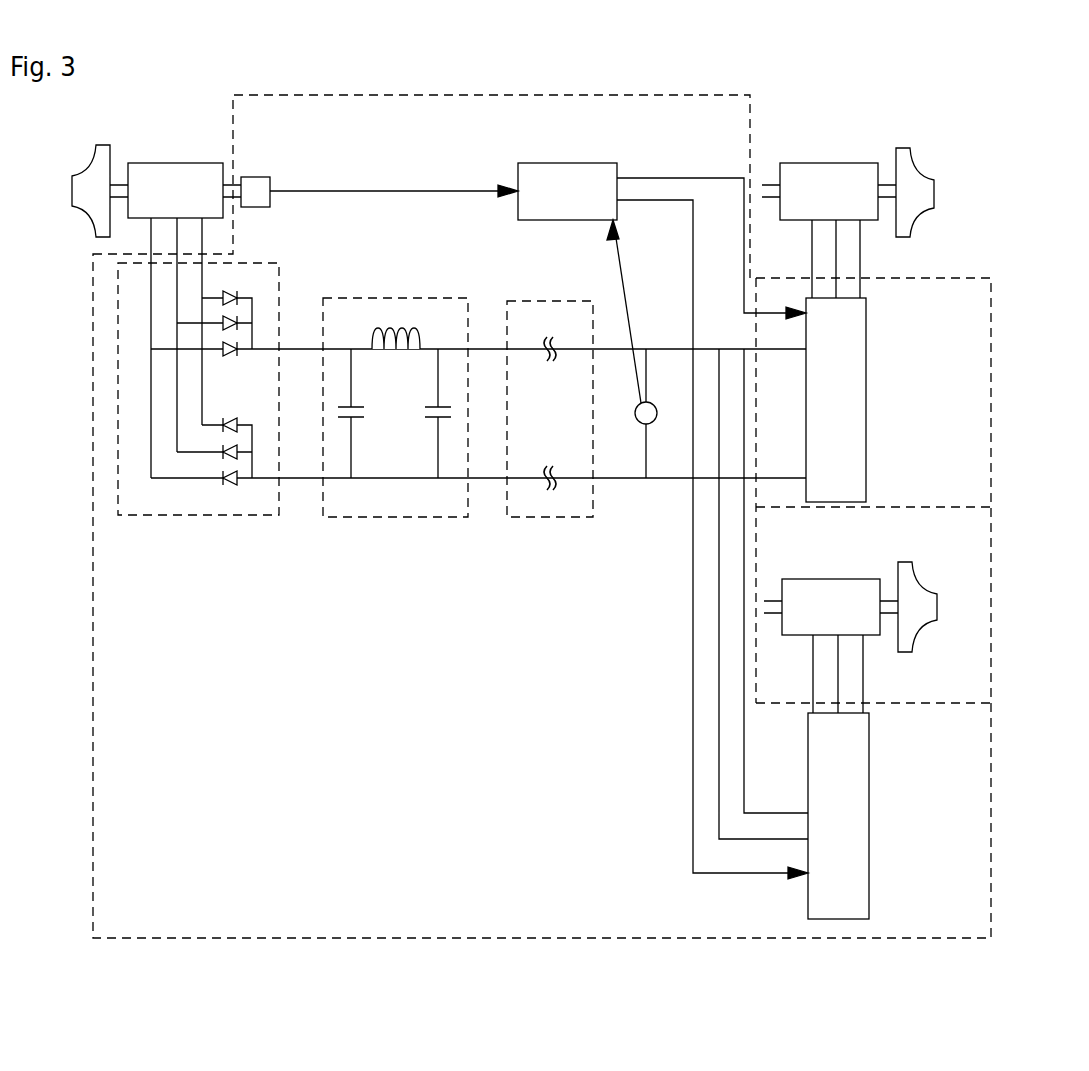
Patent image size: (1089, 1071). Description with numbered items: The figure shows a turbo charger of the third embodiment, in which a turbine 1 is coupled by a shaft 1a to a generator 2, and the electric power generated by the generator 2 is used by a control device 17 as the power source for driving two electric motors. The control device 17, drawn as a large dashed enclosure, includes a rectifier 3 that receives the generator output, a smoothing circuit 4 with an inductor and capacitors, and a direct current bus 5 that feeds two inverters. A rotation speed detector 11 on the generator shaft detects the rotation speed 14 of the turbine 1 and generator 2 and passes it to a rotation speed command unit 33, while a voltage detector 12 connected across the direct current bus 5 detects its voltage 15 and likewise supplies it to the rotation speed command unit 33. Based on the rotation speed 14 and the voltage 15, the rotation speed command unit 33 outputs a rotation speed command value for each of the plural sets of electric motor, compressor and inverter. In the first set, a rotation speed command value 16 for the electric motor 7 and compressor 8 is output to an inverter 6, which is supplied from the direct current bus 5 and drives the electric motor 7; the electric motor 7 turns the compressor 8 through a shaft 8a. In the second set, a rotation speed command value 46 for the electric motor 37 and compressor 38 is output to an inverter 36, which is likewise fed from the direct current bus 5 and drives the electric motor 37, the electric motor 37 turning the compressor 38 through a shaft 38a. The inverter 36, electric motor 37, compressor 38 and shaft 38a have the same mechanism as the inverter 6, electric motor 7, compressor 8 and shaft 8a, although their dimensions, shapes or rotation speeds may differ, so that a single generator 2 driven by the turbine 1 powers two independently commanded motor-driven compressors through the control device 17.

The turbine 1 is at (93, 177).
The shaft 1a is at (118, 193).
The generator 2 is at (177, 177).
The rotation speed detector 11 is at (260, 190).
The rotation speed 14 is at (394, 181).
The rotation speed command unit 33 is at (580, 187).
The voltage 15 is at (612, 311).
The electric motor 7 is at (818, 182).
The compressor 8 is at (915, 178).
The shaft 8a is at (892, 193).
The rotation speed command value 16 is at (711, 248).
The inverter 6 is at (848, 474).
The voltage detector 12 is at (645, 412).
The rectifier 3 is at (186, 519).
The smoothing circuit 4 is at (388, 519).
The direct current bus 5 is at (567, 519).
The electric motor 37 is at (820, 597).
The compressor 38 is at (917, 593).
The shaft 38a is at (892, 606).
The inverter 36 is at (862, 882).
The rotation speed command value 46 is at (712, 555).
The control device 17 is at (992, 720).